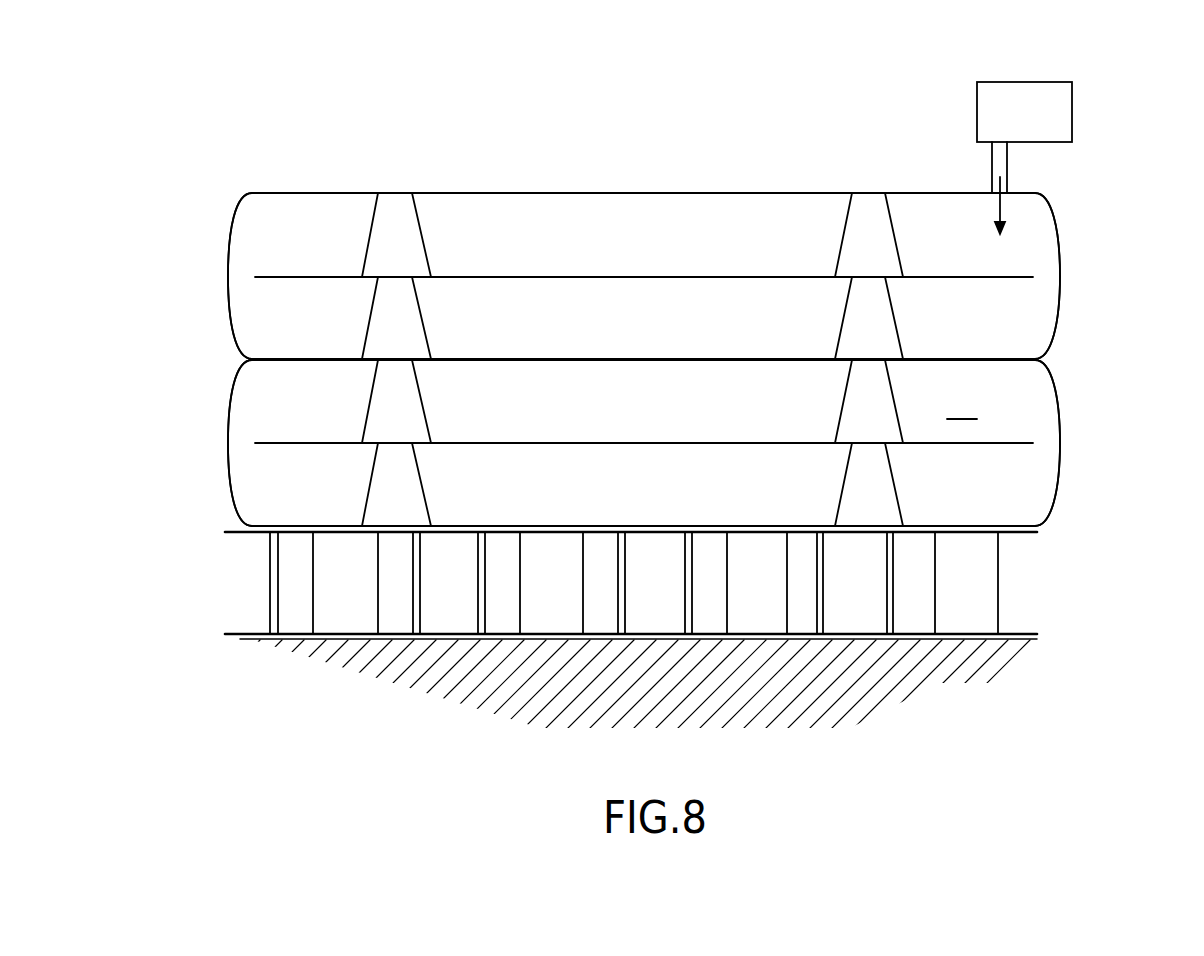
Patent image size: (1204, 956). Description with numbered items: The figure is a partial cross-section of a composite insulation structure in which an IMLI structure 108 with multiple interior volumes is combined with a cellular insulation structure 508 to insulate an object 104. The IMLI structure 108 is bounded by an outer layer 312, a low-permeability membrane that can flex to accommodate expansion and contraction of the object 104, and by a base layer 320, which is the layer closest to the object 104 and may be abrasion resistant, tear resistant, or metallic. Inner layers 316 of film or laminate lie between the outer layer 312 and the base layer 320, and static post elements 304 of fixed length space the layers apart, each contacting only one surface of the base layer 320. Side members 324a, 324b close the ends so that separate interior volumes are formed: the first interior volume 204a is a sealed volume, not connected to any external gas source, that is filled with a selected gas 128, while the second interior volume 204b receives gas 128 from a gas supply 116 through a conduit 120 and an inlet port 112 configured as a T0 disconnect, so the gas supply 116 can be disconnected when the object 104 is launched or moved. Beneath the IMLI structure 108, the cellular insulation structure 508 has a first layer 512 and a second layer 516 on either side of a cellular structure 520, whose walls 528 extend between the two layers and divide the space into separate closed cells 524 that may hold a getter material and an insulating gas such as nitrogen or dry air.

The object being insulated 104 is at (982, 655).
The IMLI structure 108 is at (617, 192).
The inlet port 112 is at (992, 193).
The gas supply 116 is at (1072, 95).
The conduit 120 is at (1007, 150).
The gas 128 is at (1007, 185).
The first interior volume 204a is at (1033, 398).
The second interior volume 204b is at (728, 223).
The post elements 304 is at (381, 222).
The outer layer 312 is at (518, 192).
The inner layers 316 is at (518, 276).
The base layer 320 is at (518, 525).
The side member 324a is at (228, 300).
The side member 324b is at (228, 412).
The cellular insulation structure 508 is at (863, 643).
The first layer 512 is at (1038, 633).
The second layer 516 is at (1025, 535).
The cellular structure 520 is at (983, 588).
The cells 524 is at (347, 626).
The walls 528 is at (272, 578).